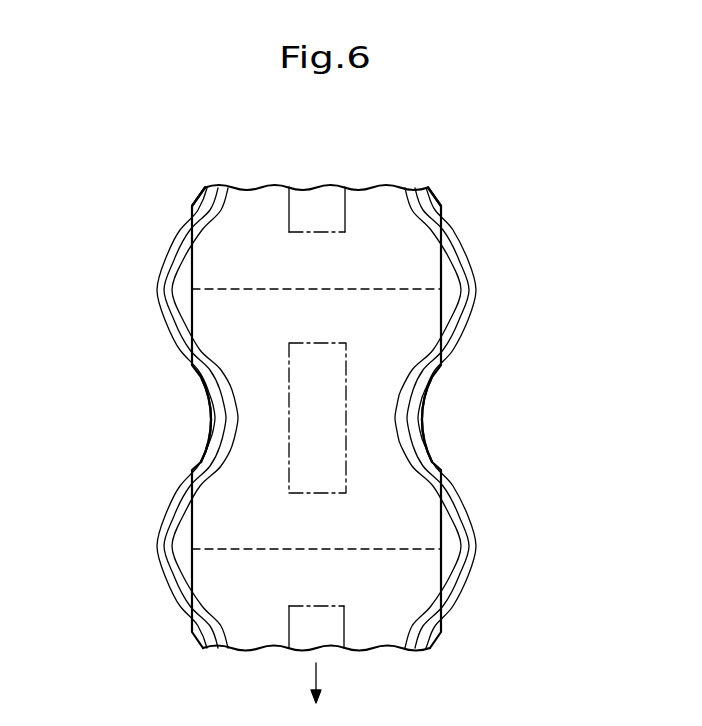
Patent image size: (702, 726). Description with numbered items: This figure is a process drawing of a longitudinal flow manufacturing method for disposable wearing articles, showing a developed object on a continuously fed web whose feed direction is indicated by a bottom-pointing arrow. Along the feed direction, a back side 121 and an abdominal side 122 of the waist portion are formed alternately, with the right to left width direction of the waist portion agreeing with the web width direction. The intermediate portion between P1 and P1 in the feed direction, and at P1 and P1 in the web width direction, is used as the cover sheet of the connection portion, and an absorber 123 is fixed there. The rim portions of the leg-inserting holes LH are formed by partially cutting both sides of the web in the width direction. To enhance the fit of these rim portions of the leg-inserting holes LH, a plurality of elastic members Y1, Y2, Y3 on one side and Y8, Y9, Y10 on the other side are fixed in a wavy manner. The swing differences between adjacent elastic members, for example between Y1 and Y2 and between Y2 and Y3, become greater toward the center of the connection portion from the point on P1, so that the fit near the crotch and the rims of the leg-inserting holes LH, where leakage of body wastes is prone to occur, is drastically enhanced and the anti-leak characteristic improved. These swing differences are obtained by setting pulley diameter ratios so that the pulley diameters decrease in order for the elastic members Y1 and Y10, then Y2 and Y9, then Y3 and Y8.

The elastic member Y1 is at (405, 190).
The elastic member Y2 is at (427, 188).
The elastic member Y3 is at (438, 207).
The elastic member Y8 is at (197, 207).
The elastic member Y9 is at (209, 188).
The elastic member Y10 is at (227, 188).
The back side 121 is at (313, 265).
The abdominal side 122 is at (290, 313).
The absorber 123 is at (315, 420).
The leg-inserting hole LH is at (207, 400).
The boundary position P1 is at (410, 288).